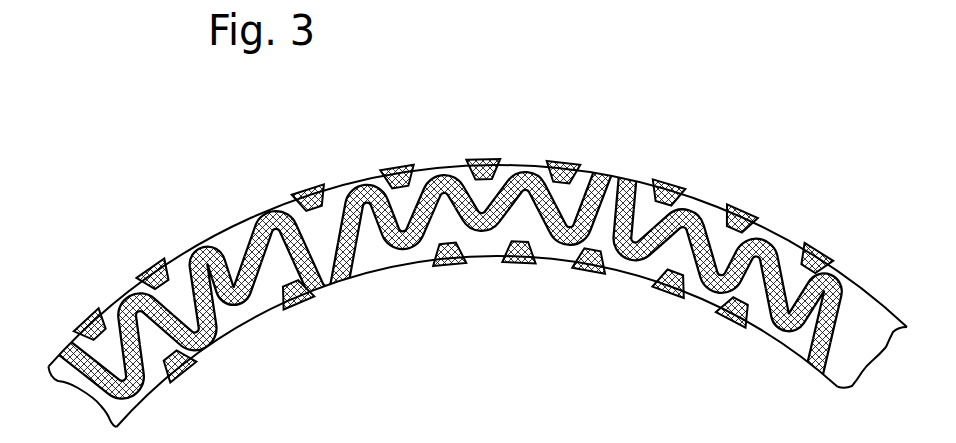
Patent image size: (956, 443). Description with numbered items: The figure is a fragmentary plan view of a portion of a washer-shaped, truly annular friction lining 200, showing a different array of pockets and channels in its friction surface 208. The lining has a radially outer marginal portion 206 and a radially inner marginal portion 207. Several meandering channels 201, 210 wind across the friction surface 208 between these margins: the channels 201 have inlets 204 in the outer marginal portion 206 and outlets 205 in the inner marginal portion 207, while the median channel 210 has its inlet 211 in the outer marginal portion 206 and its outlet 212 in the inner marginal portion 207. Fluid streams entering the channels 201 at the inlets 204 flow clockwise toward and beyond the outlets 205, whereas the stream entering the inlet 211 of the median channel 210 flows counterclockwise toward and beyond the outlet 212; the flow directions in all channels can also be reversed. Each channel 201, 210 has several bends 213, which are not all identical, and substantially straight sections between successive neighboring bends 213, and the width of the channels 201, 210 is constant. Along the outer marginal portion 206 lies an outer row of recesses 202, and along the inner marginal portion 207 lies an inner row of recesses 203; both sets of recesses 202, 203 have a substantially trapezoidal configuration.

The friction lining 200 is at (500, 121).
The meandering channels 201 is at (193, 251).
The outer row of recesses 202 is at (233, 227).
The inner row of recesses 203 is at (240, 326).
The inlets 204 is at (70, 342).
The outlets 205 is at (324, 288).
The radially outer marginal portion 206 is at (883, 303).
The radially inner marginal portion 207 is at (830, 381).
The friction surface 208 is at (770, 250).
The median channel 210 is at (527, 178).
The inlet 211 is at (592, 177).
The outlet 212 is at (353, 265).
The bends 213 is at (442, 174).